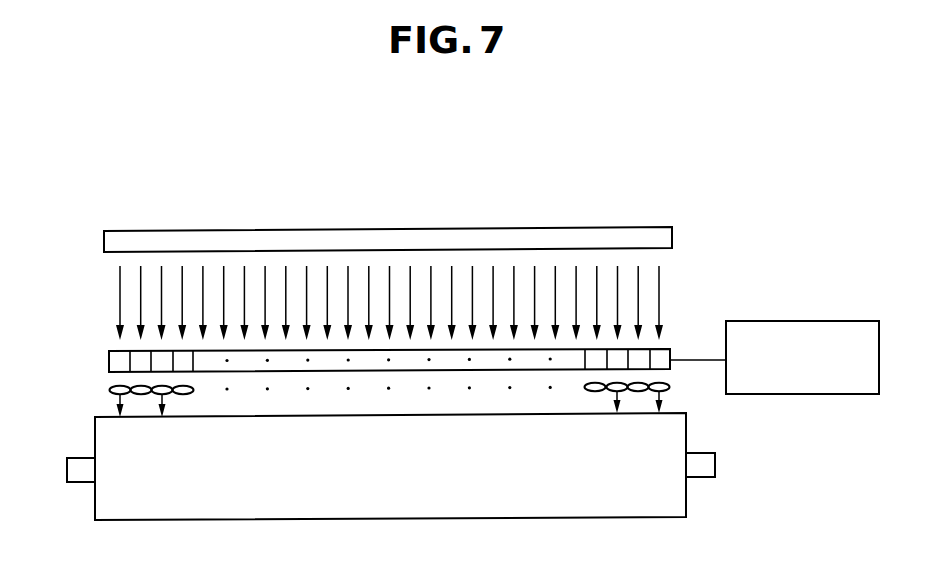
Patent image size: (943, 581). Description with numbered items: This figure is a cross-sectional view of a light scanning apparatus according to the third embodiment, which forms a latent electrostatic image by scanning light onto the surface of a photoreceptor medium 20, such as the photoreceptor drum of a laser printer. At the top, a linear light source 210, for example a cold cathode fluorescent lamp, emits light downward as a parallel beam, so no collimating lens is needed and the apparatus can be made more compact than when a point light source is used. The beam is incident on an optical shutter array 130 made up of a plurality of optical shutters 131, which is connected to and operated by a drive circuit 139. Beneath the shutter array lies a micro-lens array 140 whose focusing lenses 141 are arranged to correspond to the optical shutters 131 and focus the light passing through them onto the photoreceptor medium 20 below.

The linear light source 210 is at (653, 238).
The optical shutter array 130 is at (413, 325).
The optical shutters 131 is at (142, 364).
The drive circuit 139 is at (806, 321).
The micro-lens array 140 is at (401, 475).
The focusing lenses 141 is at (110, 391).
The photoreceptor medium 20 is at (667, 490).